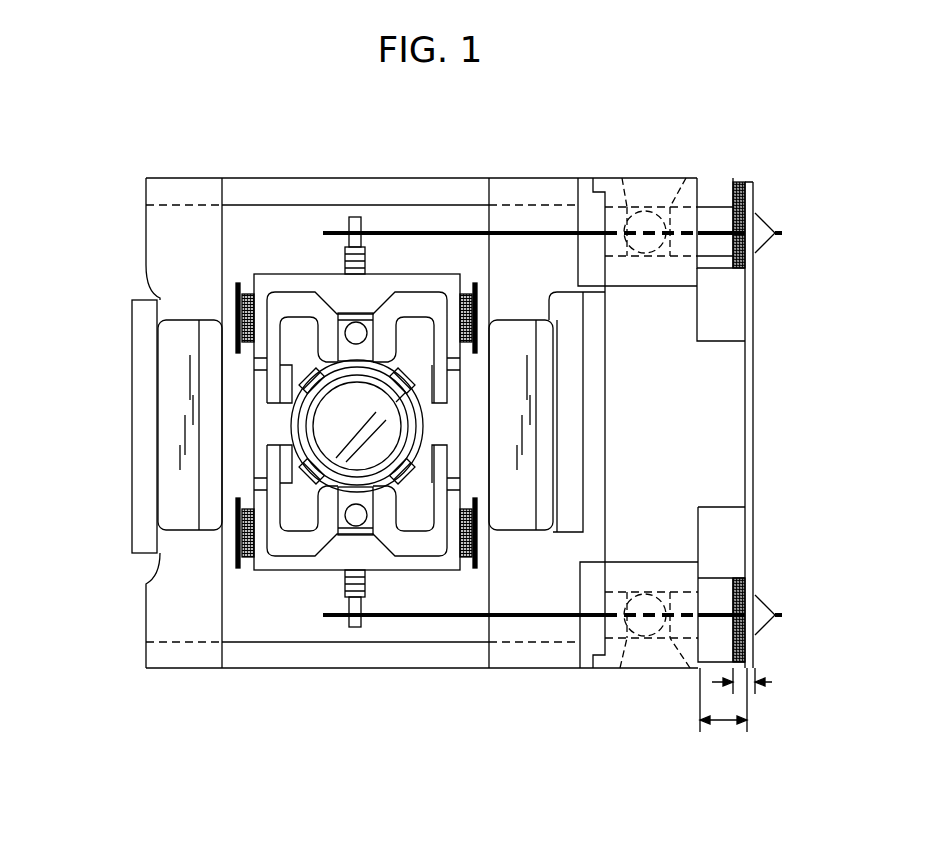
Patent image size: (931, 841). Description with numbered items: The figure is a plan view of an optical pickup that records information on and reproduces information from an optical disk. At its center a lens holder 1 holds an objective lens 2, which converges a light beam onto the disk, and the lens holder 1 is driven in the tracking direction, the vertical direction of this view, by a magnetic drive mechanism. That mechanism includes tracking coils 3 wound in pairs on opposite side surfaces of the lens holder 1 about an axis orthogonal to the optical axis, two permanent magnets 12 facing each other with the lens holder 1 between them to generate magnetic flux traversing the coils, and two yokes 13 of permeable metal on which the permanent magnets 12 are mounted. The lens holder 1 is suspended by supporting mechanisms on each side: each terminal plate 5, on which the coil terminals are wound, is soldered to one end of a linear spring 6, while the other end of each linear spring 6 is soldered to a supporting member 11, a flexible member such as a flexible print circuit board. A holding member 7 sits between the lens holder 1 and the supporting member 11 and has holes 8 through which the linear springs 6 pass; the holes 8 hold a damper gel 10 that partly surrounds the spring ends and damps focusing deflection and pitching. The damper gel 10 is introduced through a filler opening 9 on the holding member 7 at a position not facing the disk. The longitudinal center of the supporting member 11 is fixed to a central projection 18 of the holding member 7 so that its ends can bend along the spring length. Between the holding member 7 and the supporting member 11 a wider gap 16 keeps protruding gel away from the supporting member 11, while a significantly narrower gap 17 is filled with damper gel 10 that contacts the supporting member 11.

The lens holder 1 is at (283, 272).
The objective lens 2 is at (312, 462).
The tracking coils 3 is at (236, 298).
The terminal plate 5 is at (357, 217).
The linear springs 6 is at (436, 233).
The holding member 7 is at (668, 562).
The holes 8 is at (630, 255).
The filler opening 9 is at (622, 178).
The damper gel 10 is at (738, 180).
The supporting member 11 is at (753, 415).
The permanent magnets 12 is at (172, 445).
The yokes 13 is at (132, 352).
The gap 16 is at (724, 728).
The gap 17 is at (758, 690).
The central projection 18 is at (725, 340).